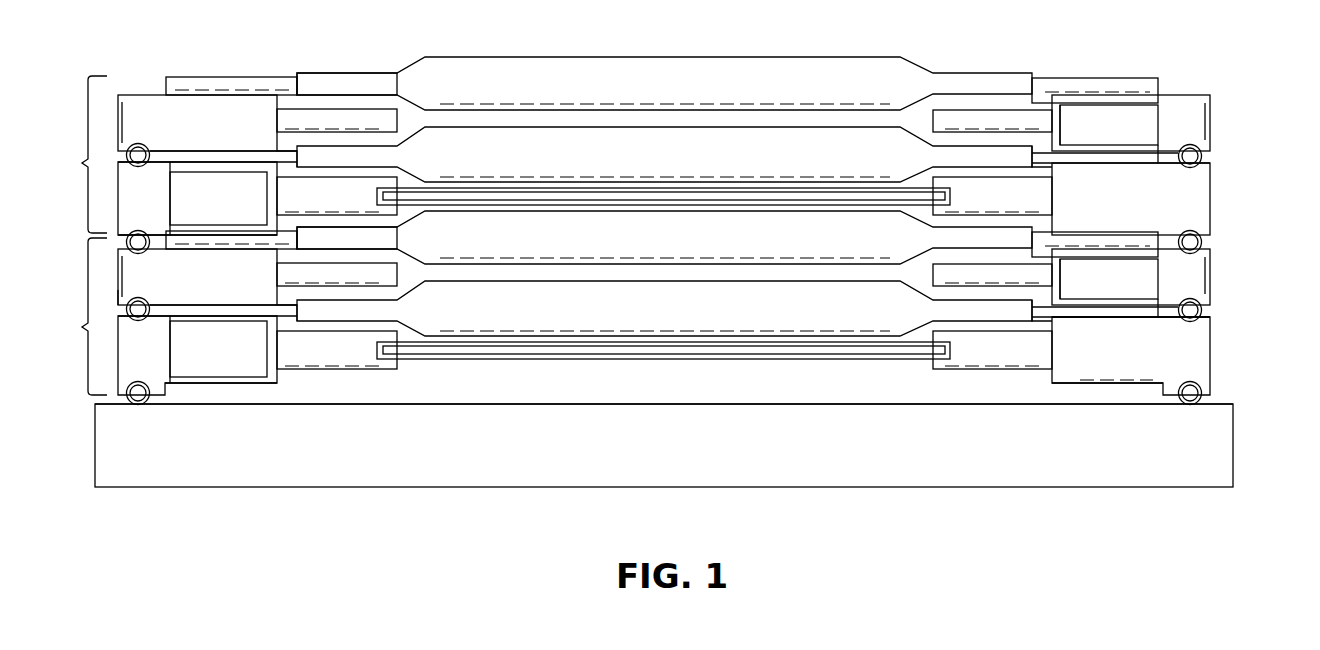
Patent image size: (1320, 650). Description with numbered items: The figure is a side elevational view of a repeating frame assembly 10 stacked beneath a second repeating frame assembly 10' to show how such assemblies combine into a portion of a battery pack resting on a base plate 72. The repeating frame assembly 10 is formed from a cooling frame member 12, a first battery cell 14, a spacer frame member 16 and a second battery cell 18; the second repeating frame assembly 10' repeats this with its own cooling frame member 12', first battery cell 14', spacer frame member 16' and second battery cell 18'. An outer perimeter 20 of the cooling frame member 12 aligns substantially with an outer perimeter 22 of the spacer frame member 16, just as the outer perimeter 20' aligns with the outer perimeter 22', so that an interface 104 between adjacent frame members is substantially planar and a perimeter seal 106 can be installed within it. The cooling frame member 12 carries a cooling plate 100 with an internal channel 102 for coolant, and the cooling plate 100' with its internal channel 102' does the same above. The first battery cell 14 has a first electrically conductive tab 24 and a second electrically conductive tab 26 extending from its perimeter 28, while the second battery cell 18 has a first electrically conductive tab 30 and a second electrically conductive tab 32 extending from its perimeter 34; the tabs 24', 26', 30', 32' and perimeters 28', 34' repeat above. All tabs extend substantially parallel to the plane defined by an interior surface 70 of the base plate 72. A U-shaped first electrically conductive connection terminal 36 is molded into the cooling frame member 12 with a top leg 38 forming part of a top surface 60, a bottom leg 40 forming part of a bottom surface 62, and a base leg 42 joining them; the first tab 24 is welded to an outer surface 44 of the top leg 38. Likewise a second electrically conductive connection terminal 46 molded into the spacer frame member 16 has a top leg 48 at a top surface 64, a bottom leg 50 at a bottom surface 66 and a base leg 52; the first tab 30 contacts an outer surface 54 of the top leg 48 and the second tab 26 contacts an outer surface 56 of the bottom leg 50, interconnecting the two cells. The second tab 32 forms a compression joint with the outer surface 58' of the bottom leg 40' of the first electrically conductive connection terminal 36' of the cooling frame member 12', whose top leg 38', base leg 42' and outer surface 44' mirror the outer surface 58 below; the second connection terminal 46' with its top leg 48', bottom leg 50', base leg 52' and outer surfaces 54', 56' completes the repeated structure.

The repeating frame assembly 10 is at (78, 316).
The second repeating frame assembly 10' is at (76, 154).
The cooling frame member 12 is at (1179, 345).
The cooling frame member 12' is at (1231, 159).
The first battery cell 14 is at (664, 308).
The first battery cell 14' is at (664, 154).
The spacer frame member 16 is at (1242, 266).
The spacer frame member 16' is at (1243, 112).
The second battery cell 18 is at (664, 237).
The second battery cell 18' is at (664, 83).
The outer perimeter of the cooling frame member 20 is at (1165, 356).
The outer perimeter of the cooling frame member 20' is at (1167, 199).
The outer perimeter of the spacer frame member 22 is at (1165, 277).
The outer perimeter of the spacer frame member 22' is at (1167, 123).
The first electrically conductive tab 24 is at (257, 280).
The first electrically conductive tab 24' is at (197, 126).
The second electrically conductive tab 26 is at (1121, 326).
The second electrically conductive tab 26' is at (1121, 173).
The perimeter of the first battery cell 28 is at (207, 330).
The perimeter of the first battery cell 28' is at (207, 176).
The first electrically conductive tab 30 is at (1097, 222).
The first electrically conductive tab 30' is at (1097, 63).
The second electrically conductive tab 32 is at (213, 254).
The second electrically conductive tab 32' is at (231, 63).
The perimeter of the second battery cell 34 is at (347, 236).
The perimeter of the second battery cell 34' is at (333, 63).
The first electrically conductive connection terminal 36 is at (293, 371).
The first electrically conductive connection terminal 36' is at (328, 91).
The top leg 38 is at (153, 322).
The top leg 38' is at (152, 170).
The bottom leg 40 is at (197, 355).
The bottom leg 40' is at (197, 198).
The base leg 42 is at (337, 350).
The base leg 42' is at (337, 196).
The outer surface of the top leg 44 is at (218, 348).
The outer surface of the top leg 44' is at (218, 198).
The second electrically conductive connection terminal 46 is at (1062, 324).
The second electrically conductive connection terminal 46' is at (1063, 168).
The top leg 48 is at (1095, 226).
The top leg 48' is at (1095, 69).
The bottom leg 50 is at (1109, 281).
The bottom leg 50' is at (1109, 127).
The base leg 52 is at (992, 277).
The base leg 52' is at (992, 123).
The outer surface of the top leg 54 is at (1185, 247).
The outer surface of the top leg 54' is at (1079, 122).
The outer surface of the bottom leg 56 is at (1162, 293).
The outer surface of the bottom leg 56' is at (1158, 139).
The outer surface of the bottom leg 58 is at (221, 408).
The outer surface of the bottom leg 58' is at (197, 258).
The top surface of the cooling frame member 60 is at (1112, 313).
The bottom surface of the cooling frame member 62 is at (1072, 385).
The top surface of the spacer frame member 64 is at (1197, 236).
The bottom surface of the spacer frame member 66 is at (1201, 308).
The interior surface of the base plate 70 is at (431, 405).
The base plate 72 is at (650, 455).
The cooling plate 100 is at (663, 374).
The cooling plate 100' is at (663, 221).
The internal channel 102 is at (960, 368).
The internal channel 102' is at (958, 215).
The interface 104 is at (118, 309).
The perimeter seal 106 is at (128, 303).